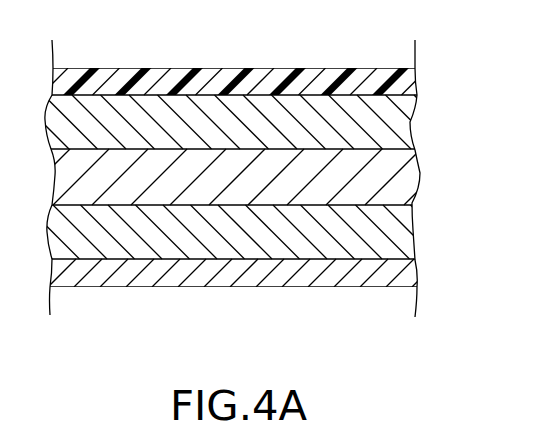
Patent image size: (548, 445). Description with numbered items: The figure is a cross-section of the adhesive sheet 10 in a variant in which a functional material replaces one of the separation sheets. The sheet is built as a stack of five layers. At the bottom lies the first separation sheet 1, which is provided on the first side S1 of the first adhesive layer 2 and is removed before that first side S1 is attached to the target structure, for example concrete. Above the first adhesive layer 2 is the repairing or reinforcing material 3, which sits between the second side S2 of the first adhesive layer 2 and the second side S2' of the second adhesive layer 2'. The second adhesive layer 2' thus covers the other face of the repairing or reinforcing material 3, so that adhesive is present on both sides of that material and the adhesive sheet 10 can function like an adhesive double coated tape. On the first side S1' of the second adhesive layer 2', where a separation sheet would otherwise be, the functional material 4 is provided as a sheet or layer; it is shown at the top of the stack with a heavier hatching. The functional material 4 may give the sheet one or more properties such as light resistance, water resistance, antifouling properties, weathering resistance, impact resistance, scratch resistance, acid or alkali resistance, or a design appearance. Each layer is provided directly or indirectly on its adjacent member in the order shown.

The adhesive sheet 10 is at (270, 342).
The first separation sheet 1 is at (405, 272).
The first adhesive layer 2 is at (240, 232).
The repairing or reinforcing material 3 is at (410, 180).
The second adhesive layer 2' is at (250, 122).
The functional material 4 is at (405, 84).
The first side of the first adhesive layer S1 is at (235, 299).
The second side of the first adhesive layer S2 is at (235, 272).
The first side of the second adhesive layer S1' is at (235, 58).
The second side of the second adhesive layer S2' is at (235, 85).